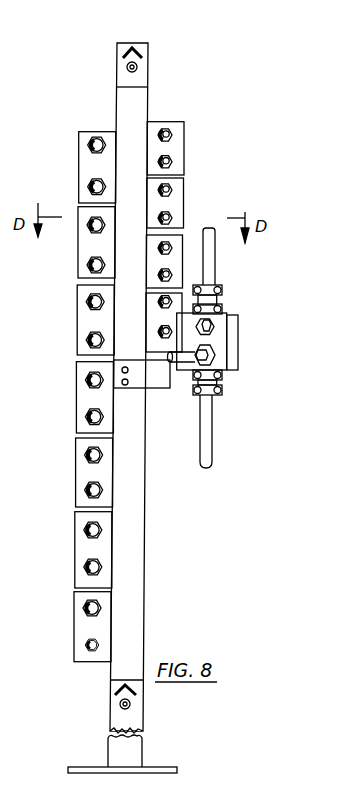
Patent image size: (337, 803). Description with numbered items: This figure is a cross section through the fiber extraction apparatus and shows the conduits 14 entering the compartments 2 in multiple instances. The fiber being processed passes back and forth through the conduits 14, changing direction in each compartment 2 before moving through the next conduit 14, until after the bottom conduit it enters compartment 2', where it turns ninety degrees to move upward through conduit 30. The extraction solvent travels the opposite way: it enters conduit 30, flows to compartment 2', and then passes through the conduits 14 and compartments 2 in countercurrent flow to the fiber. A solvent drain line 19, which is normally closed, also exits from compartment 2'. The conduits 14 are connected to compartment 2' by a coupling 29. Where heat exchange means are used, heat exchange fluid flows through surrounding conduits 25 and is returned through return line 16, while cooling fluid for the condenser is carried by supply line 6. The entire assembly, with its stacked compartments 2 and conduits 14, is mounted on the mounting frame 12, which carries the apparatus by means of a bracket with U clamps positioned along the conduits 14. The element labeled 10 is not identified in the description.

The compartment 2 is at (173, 379).
The compartment 2' is at (238, 341).
The supply line 6 is at (2, 342).
The hex nut 10 is at (216, 322).
The mounting frame 12 is at (145, 582).
The conduit 14 is at (167, 133).
The return line 16 is at (215, 237).
The solvent drain line 19 is at (212, 418).
The surrounding conduits 25 is at (5, 317).
The coupling 29 is at (170, 160).
The conduit 30 is at (7, 257).